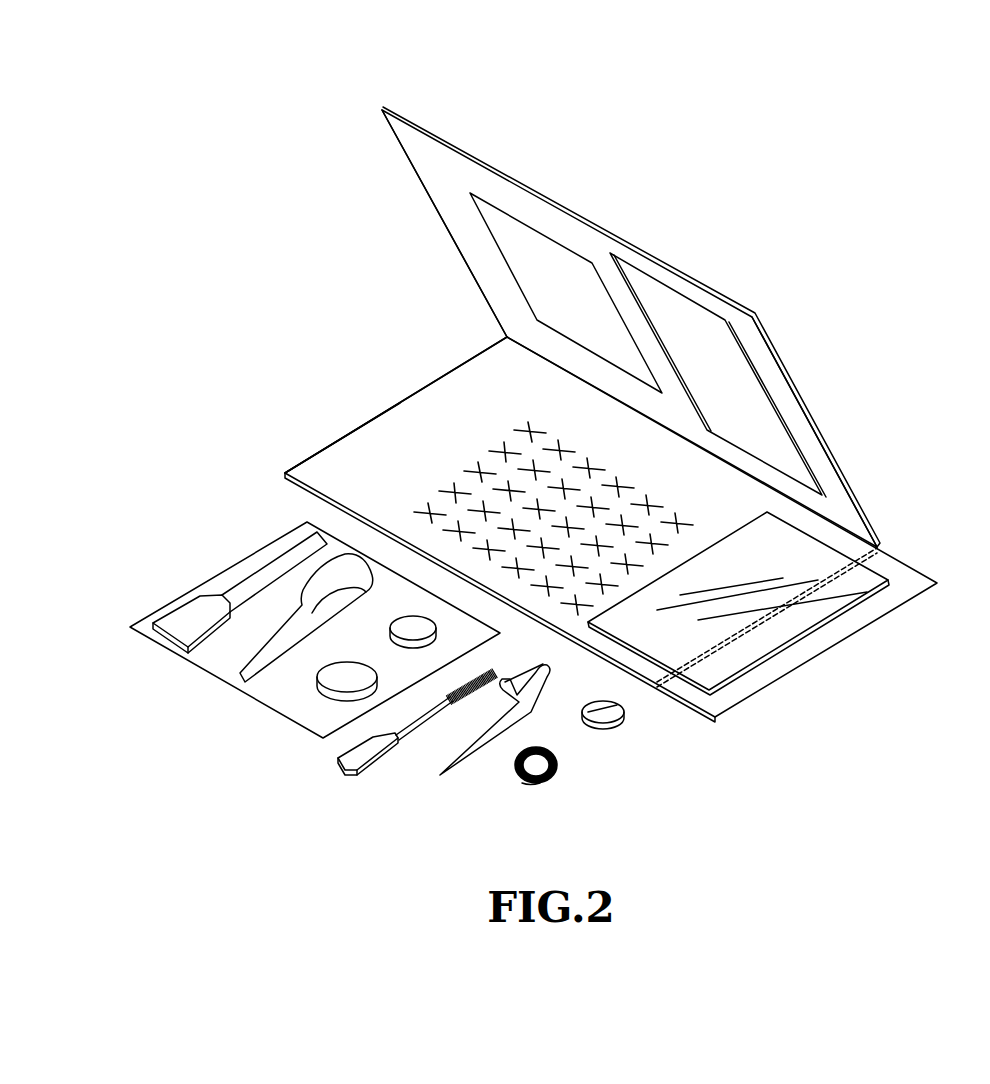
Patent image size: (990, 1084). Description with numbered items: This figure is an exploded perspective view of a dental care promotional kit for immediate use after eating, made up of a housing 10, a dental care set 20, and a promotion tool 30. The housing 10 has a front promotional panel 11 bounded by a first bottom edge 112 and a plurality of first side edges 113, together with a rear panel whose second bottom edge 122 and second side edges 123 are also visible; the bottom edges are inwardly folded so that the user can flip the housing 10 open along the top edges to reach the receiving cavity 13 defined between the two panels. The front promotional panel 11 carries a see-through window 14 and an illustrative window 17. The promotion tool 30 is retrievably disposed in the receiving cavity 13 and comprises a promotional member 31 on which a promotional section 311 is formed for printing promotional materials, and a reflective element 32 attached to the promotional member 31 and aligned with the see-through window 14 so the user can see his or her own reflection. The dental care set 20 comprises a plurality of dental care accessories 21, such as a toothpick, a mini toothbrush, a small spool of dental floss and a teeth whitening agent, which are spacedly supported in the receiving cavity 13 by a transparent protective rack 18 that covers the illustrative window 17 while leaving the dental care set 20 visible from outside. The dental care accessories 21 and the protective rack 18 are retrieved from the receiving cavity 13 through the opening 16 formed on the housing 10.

The housing 10 is at (636, 211).
The front promotional panel 11 is at (550, 221).
The first bottom edge 112 is at (669, 264).
The first side edges 113 is at (421, 190).
The see-through window 14 is at (726, 372).
The illustrative window 17 is at (527, 238).
The receiving cavity 13 is at (456, 342).
The promotion tool 30 is at (413, 383).
The promotional member 31 is at (320, 472).
The promotional section 311 is at (745, 492).
The second side edges 123 is at (355, 406).
The second bottom edge 122 is at (636, 679).
The reflective element 32 is at (829, 599).
The opening 16 is at (266, 497).
The protective rack 18 is at (222, 655).
The dental care set 20 is at (410, 774).
The dental care accessories 21 is at (530, 710).